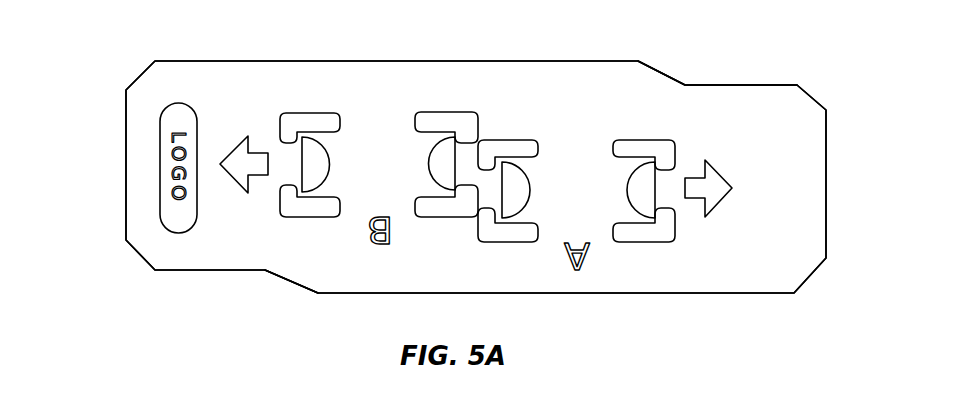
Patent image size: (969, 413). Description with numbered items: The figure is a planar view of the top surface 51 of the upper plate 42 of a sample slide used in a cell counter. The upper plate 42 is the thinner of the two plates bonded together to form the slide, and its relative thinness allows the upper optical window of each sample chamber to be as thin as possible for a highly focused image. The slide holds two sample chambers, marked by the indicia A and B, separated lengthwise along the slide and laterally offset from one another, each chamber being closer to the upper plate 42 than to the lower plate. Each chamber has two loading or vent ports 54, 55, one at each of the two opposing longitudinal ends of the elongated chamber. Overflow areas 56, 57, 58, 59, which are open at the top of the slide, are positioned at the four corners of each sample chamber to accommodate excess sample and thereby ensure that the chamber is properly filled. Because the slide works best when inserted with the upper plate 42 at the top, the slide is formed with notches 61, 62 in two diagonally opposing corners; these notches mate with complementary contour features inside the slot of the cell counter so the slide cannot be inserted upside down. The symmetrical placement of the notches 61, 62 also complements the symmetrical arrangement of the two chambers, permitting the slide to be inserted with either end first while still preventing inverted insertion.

The upper plate 42 is at (130, 62).
The top surface 51 is at (597, 110).
The loading or vent port 54 is at (335, 158).
The loading or vent port 55 is at (422, 152).
The overflow area 56 is at (315, 113).
The overflow area 57 is at (318, 217).
The overflow area 58 is at (443, 112).
The overflow area 59 is at (440, 217).
The notch 61 is at (699, 64).
The notch 62 is at (256, 283).